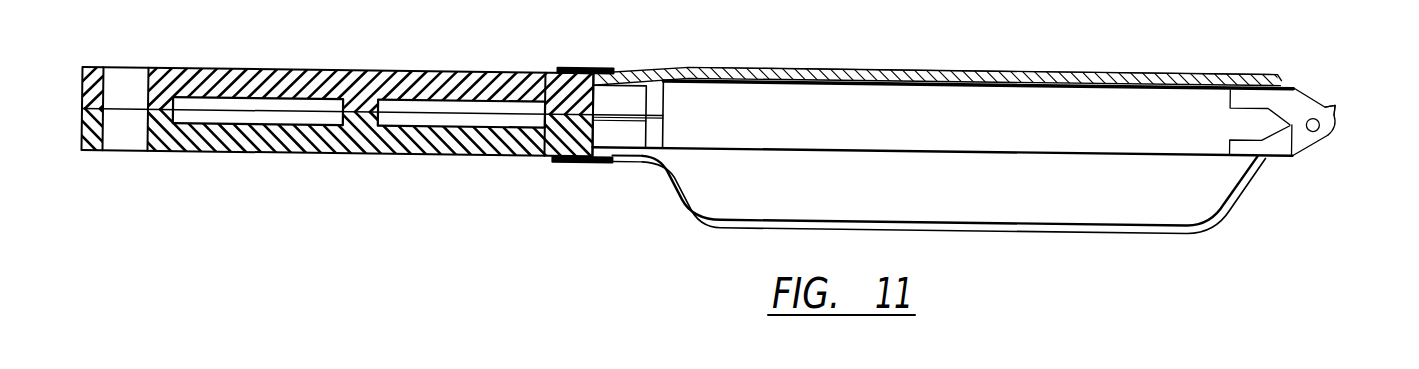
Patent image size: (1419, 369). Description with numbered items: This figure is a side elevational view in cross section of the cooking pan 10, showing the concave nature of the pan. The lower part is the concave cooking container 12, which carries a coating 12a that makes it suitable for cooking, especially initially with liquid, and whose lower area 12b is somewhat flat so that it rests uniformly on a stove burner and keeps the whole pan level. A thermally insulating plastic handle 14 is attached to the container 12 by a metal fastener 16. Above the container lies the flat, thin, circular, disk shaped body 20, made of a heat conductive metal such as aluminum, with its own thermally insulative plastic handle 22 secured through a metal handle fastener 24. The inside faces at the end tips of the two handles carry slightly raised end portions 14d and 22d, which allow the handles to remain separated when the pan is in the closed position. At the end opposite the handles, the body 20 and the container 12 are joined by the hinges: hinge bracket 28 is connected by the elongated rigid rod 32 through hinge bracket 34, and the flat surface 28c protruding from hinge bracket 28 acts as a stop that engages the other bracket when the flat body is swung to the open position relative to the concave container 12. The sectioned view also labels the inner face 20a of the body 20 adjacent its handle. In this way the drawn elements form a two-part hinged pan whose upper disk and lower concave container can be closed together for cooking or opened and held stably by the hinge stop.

The cooking pan 10 is at (1090, 68).
The concave cooking container 12 is at (684, 212).
The coating 12a is at (981, 220).
The flat circular area 12b is at (981, 231).
The handle 14 is at (408, 158).
The raised end portion 14d is at (90, 151).
The metal fastener 16 is at (590, 165).
The disk shaped body 20 is at (917, 68).
The sheath inner surface 20a is at (927, 88).
The handle 22 is at (277, 69).
The raised end portion 22d is at (94, 67).
The handle fastener 24 is at (590, 68).
The hinge bracket 28 is at (1295, 150).
The flat surface 28c is at (1334, 104).
The rod 32 is at (1318, 128).
The hinge bracket 34 is at (1298, 103).